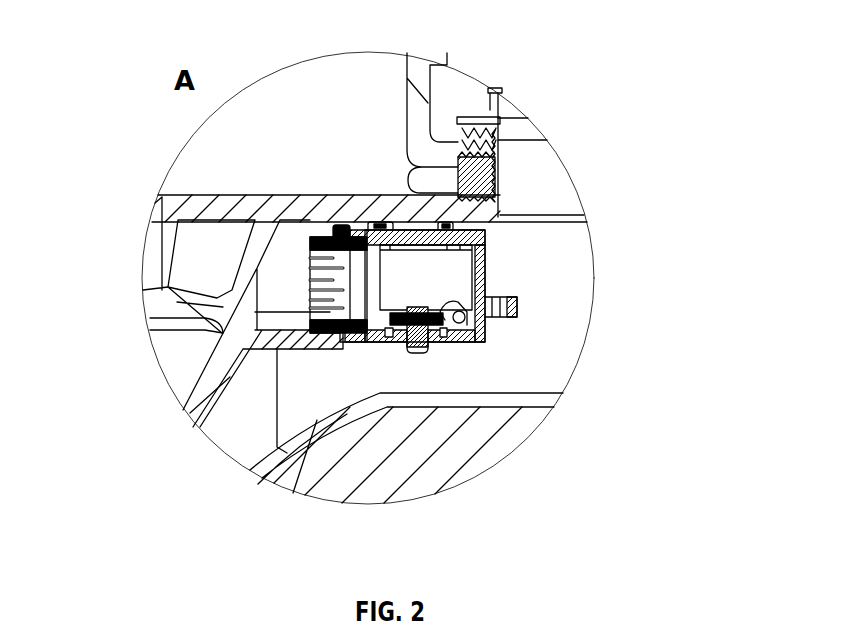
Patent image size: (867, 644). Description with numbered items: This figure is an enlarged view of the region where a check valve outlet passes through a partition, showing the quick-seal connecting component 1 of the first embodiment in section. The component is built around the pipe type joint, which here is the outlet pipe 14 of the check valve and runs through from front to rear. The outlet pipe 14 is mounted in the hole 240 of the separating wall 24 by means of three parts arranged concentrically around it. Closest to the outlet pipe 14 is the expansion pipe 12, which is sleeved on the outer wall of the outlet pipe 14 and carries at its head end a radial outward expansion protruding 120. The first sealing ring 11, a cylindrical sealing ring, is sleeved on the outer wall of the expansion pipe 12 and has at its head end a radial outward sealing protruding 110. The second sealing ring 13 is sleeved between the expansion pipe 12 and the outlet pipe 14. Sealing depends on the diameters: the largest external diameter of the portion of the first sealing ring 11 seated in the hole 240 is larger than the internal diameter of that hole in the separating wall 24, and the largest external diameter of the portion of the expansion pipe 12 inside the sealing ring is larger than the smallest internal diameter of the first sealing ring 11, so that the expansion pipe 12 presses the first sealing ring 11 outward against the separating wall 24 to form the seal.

The quick-seal connecting component 1 is at (490, 240).
The first sealing ring 11 is at (343, 230).
The sealing protruding 110 is at (347, 226).
The expansion pipe 12 is at (327, 330).
The expansion protruding 120 is at (355, 322).
The second sealing ring 13 is at (378, 225).
The outlet pipe 14 is at (437, 343).
The separating wall 24 is at (335, 234).
The hole 240 is at (222, 330).